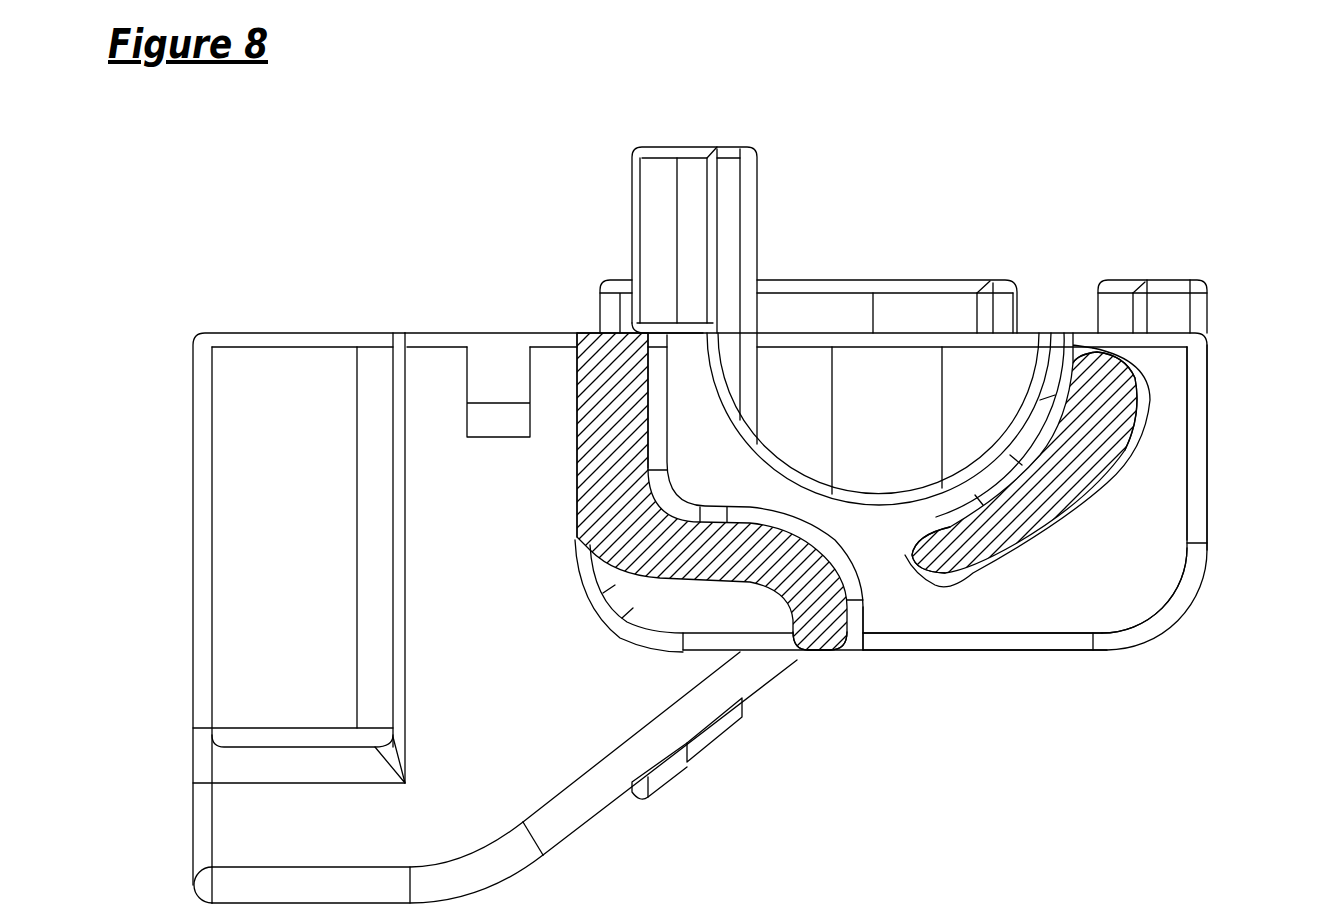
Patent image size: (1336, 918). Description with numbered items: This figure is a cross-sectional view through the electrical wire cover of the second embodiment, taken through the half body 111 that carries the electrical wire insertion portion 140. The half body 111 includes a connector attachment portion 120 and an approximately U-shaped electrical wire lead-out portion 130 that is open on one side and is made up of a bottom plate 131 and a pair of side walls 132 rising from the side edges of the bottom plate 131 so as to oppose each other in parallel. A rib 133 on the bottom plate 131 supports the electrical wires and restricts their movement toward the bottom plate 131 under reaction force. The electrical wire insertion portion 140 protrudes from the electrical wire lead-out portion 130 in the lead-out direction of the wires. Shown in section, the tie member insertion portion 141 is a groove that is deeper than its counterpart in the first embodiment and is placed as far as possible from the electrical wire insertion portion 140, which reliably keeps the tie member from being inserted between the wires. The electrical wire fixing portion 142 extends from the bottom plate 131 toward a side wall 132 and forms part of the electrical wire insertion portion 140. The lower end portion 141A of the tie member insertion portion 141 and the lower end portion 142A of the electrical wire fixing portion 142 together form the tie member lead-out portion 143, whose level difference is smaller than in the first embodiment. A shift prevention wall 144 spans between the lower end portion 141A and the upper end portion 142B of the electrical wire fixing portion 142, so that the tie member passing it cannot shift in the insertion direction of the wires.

The half body 111 is at (553, 138).
The connector attachment portion 120 is at (252, 290).
The electrical wire lead-out portion 130 is at (1172, 230).
The bottom plate 131 is at (901, 655).
The side wall 132 is at (577, 380).
The rib 133 is at (886, 510).
The electrical wire insertion portion 140 is at (916, 373).
The tie member insertion portion 141 is at (603, 520).
The lower end portion of the tie member insertion portion 141A is at (820, 640).
The electrical wire fixing portion 142 is at (1070, 497).
The lower end portion of the electrical wire fixing portion 142A is at (935, 547).
The upper end portion of the electrical wire fixing portion 142B is at (1083, 378).
The tie member lead-out portion 143 is at (887, 567).
The shift prevention wall 144 is at (1133, 583).